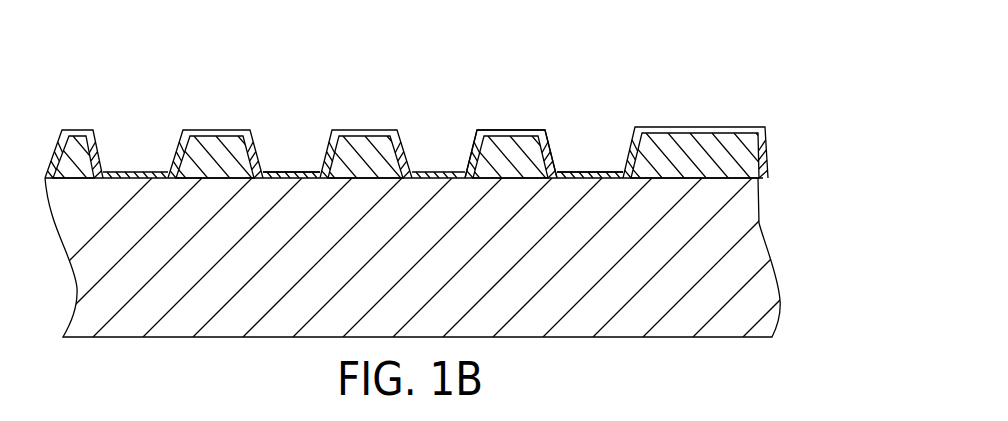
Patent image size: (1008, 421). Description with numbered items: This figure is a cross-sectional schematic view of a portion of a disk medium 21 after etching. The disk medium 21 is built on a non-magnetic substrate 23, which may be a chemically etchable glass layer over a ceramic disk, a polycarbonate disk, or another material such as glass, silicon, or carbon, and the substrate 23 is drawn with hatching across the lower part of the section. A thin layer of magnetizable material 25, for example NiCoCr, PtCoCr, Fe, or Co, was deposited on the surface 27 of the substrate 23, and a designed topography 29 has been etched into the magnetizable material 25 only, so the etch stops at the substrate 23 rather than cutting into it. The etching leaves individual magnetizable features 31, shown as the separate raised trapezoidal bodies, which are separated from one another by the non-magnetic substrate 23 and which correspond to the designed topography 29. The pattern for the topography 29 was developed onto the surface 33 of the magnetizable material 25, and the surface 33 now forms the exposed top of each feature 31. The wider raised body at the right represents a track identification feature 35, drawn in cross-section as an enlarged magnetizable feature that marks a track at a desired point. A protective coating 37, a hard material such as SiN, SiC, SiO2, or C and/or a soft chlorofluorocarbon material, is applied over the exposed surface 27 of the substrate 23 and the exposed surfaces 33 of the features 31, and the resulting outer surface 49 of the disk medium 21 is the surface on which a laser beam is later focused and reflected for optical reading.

The disk medium 21 is at (476, 172).
The substrate 23 is at (755, 308).
The magnetizable material 25 is at (762, 172).
The surface of the substrate 27 is at (444, 172).
The designed topography 29 is at (512, 65).
The magnetizable features 31 is at (233, 121).
The surface of the magnetizable material 33 is at (77, 130).
The track identification features 35 is at (720, 124).
The protective coating 37 is at (560, 172).
The surface of the disk medium 49 is at (290, 172).